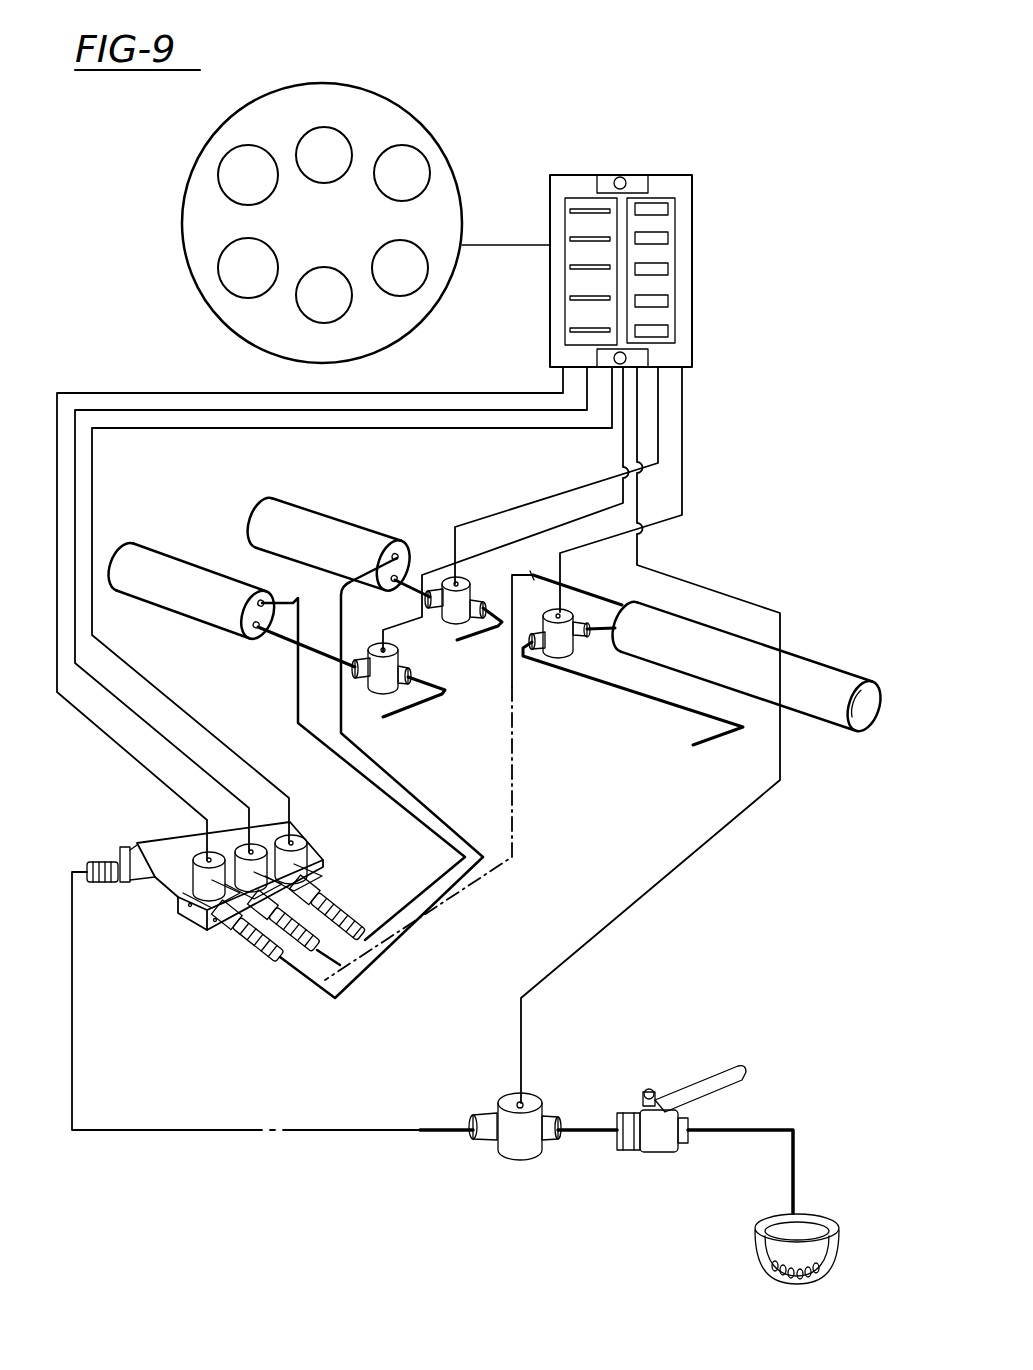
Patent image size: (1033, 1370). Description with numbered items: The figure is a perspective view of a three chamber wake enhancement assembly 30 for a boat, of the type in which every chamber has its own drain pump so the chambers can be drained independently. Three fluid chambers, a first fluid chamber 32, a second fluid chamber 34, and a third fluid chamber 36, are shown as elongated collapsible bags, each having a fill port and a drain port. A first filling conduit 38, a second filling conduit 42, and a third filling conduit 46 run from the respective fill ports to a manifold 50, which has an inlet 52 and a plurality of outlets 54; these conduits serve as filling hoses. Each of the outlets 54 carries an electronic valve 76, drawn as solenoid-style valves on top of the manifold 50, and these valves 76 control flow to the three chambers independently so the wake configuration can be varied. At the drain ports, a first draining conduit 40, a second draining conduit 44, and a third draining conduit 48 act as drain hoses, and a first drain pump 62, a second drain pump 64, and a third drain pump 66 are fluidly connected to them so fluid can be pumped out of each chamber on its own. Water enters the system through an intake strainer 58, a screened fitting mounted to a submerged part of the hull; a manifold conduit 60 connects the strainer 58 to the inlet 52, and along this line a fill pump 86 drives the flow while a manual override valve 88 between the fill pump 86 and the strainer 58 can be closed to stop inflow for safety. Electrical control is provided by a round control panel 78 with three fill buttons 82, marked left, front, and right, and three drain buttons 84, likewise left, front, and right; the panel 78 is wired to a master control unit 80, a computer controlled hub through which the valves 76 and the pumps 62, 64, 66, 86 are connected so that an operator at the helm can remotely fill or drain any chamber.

The three chamber wake enhancement assembly 30 is at (755, 143).
The first fluid chamber 32 is at (712, 650).
The second fluid chamber 34 is at (173, 597).
The third fluid chamber 36 is at (310, 528).
The first filling conduit 38 is at (600, 606).
The first draining conduit 40 is at (606, 690).
The second filling conduit 42 is at (363, 580).
The second draining conduit 44 is at (472, 640).
The third filling conduit 46 is at (290, 597).
The third draining conduit 48 is at (417, 707).
The manifold 50 is at (167, 837).
The inlet 52 is at (115, 850).
The outlets 54 is at (320, 955).
The intake strainer 58 is at (780, 1242).
The manifold conduit 60 is at (587, 1127).
The first drain pump 62 is at (563, 663).
The second drain pump 64 is at (470, 580).
The third drain pump 66 is at (378, 680).
The electronic valves 76 is at (200, 905).
The control panel 78 is at (373, 123).
The master control unit 80 is at (653, 187).
The fill buttons 82 is at (293, 140).
The drain buttons 84 is at (235, 293).
The fill pump 86 is at (512, 1160).
The manual override valve 88 is at (653, 1152).